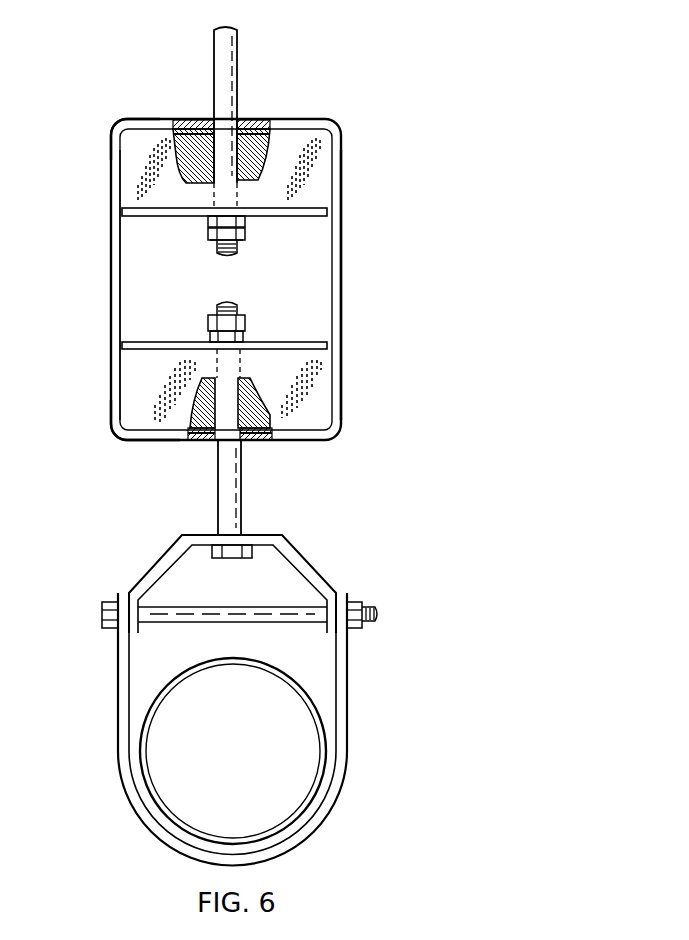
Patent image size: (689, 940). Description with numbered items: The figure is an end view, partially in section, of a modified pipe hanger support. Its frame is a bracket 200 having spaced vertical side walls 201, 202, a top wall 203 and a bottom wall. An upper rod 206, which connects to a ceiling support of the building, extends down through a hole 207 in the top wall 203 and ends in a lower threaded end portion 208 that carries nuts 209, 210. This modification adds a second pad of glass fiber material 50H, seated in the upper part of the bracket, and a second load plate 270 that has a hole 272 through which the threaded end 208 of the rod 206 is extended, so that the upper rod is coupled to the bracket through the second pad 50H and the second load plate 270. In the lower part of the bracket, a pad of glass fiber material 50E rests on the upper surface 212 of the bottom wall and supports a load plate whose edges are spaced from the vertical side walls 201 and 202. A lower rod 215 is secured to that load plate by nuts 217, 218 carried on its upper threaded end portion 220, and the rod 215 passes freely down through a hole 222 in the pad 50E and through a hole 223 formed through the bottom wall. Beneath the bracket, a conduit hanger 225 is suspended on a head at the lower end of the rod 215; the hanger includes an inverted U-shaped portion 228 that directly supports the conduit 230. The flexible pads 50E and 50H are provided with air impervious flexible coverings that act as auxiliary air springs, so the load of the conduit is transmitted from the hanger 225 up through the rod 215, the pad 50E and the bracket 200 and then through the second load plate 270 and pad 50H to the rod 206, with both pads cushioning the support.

The bracket 200 is at (340, 120).
The vertical side wall 201 is at (119, 302).
The vertical side wall 202 is at (336, 277).
The top wall 203 is at (111, 127).
The rod 206 is at (235, 72).
The hole 207 is at (241, 120).
The second pad of glass fiber material 50H is at (320, 189).
The pad of glass fiber material 50E is at (325, 380).
The second load plate 270 is at (265, 216).
The hole 272 is at (214, 217).
The nut 209 is at (208, 231).
The nut 210 is at (218, 243).
The lower threaded end portion 208 is at (234, 255).
The upper threaded end portion 220 is at (233, 302).
The nut 217 is at (208, 326).
The nut 218 is at (245, 334).
The upper surface 212 is at (140, 428).
The hole 222 is at (247, 393).
The hole 223 is at (211, 433).
The rod 215 is at (233, 473).
The conduit hanger 225 is at (313, 559).
The inverted U-shaped portion 228 is at (340, 678).
The conduit 230 is at (328, 772).